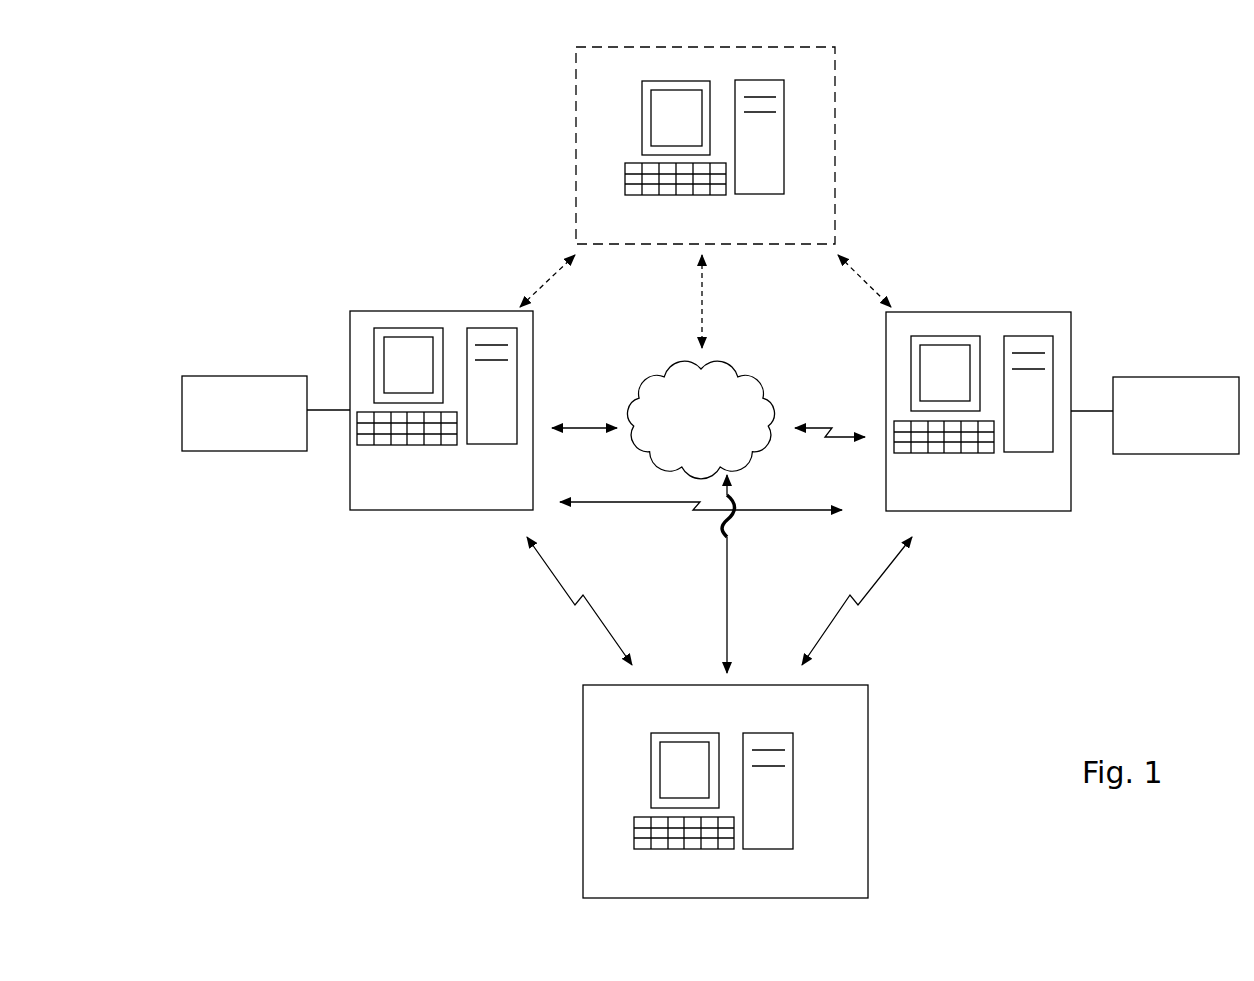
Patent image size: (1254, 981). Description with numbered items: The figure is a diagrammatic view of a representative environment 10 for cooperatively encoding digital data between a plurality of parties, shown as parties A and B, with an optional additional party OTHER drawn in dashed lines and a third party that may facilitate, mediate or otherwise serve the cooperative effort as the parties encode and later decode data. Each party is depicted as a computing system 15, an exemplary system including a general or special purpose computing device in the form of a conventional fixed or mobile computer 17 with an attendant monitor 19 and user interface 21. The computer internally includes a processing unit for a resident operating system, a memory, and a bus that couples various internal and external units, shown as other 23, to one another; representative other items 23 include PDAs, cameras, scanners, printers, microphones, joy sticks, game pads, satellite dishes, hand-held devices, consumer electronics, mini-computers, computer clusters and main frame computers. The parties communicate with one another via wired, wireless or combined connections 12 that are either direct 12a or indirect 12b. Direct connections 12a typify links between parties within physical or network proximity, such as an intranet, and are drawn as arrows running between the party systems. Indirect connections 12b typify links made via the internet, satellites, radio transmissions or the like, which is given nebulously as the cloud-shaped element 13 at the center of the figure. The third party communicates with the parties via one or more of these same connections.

The representative environment 10 is at (221, 178).
The connections 12 is at (324, 412).
The direct connections 12a is at (540, 285).
The indirect connections 12b is at (702, 302).
The network element 13 is at (762, 375).
The computing system 15 is at (838, 100).
The computer 17 is at (767, 195).
The monitor 19 is at (660, 81).
The user interface 21 is at (667, 195).
The other items 23 is at (240, 375).